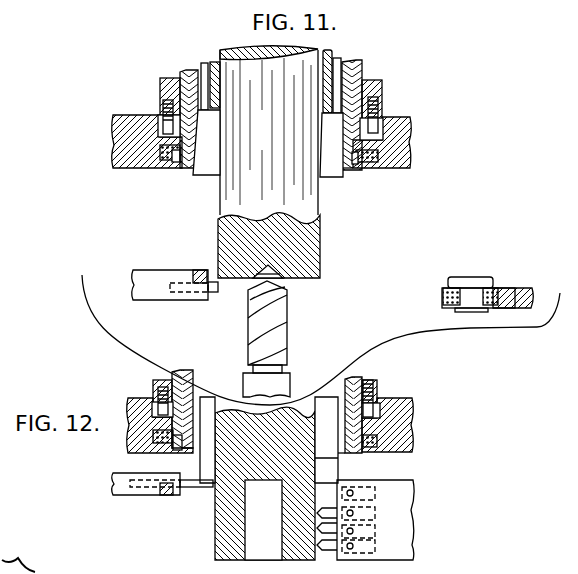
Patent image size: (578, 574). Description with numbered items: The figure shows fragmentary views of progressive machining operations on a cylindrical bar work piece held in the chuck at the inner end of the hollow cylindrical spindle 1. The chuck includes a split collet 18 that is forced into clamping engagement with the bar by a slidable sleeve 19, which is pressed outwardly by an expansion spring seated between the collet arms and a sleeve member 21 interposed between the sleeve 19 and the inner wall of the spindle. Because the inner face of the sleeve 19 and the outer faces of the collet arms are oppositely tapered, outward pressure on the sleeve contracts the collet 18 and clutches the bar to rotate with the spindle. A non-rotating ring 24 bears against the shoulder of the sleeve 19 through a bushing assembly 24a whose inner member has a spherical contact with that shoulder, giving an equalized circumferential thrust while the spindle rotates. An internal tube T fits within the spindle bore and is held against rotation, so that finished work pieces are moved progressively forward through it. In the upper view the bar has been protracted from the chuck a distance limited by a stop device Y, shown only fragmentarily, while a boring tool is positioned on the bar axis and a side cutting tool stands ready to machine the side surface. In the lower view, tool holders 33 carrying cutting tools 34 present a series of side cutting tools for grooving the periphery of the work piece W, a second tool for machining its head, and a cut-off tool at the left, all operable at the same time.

In FIG. 11, the cylindrical spindle 1 is at (380, 103).
In FIG. 12, the cylindrical spindle 1 is at (377, 387).
In FIG. 11, the split collet 18 is at (322, 177).
In FIG. 12, the split collet 18 is at (330, 457).
In FIG. 11, the slidable sleeve 19 is at (352, 170).
In FIG. 12, the slidable sleeve 19 is at (348, 453).
In FIG. 11, the sleeve member 21 is at (182, 72).
In FIG. 12, the sleeve member 21 is at (177, 377).
In FIG. 11, the ring 24 is at (410, 143).
In FIG. 12, the ring 24 is at (410, 425).
In FIG. 11, the bushing assembly 24a is at (160, 168).
In FIG. 12, the bushing assembly 24a is at (128, 452).
In FIG. 11, the tool holder 33 is at (145, 270).
In FIG. 12, the tool holder 33 is at (128, 495).
In FIG. 11, the cutting tool 34 is at (214, 296).
In FIG. 12, the cutting tool 34 is at (197, 488).
In FIG. 11, the internal tube T is at (335, 53).
In FIG. 11, the workpiece W is at (269, 162).
In FIG. 12, the workpiece W is at (265, 483).
In FIG. 11, the stop device Y is at (495, 308).